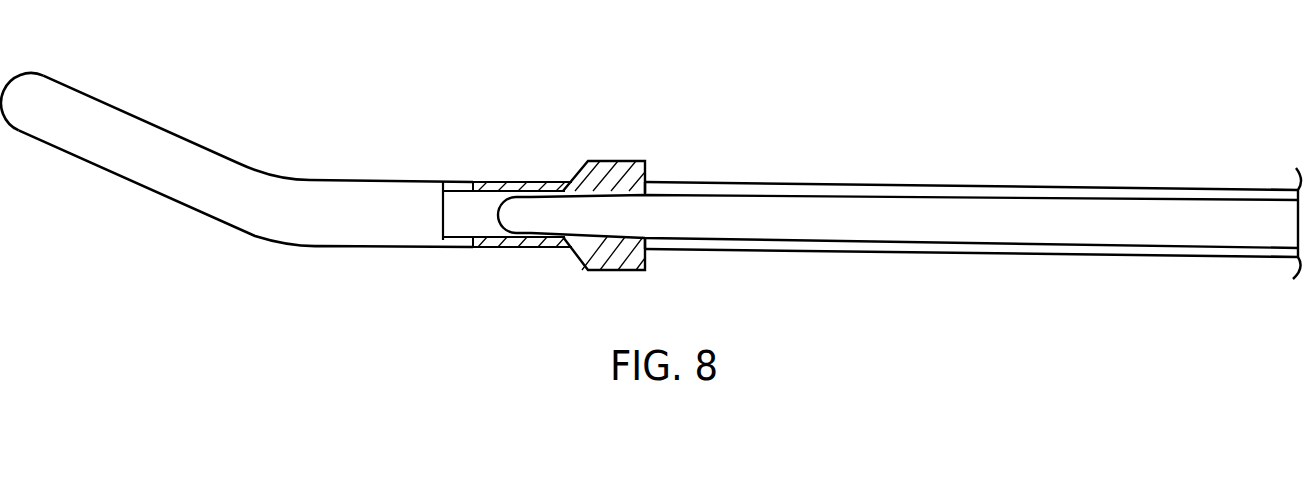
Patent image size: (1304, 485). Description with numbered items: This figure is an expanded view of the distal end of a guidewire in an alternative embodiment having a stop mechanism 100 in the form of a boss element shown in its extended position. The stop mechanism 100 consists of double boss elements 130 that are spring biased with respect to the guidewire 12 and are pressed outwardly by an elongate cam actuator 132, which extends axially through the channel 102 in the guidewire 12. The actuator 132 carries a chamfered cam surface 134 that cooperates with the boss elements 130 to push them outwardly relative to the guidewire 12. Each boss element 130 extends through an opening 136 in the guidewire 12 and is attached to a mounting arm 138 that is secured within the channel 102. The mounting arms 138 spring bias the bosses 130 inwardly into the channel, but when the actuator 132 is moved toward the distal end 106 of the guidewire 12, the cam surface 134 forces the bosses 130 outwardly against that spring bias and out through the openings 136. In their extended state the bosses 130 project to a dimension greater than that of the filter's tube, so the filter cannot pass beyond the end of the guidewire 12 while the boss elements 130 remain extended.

The stop mechanism 100 is at (697, 112).
The distal end 106 is at (140, 125).
The guidewire 12 is at (854, 185).
The channel 102 is at (1132, 193).
The elongate cam actuator 132 is at (940, 243).
The boss elements 130 is at (613, 160).
The chamfered cam surface 134 is at (545, 248).
The opening 136 is at (645, 184).
The mounting arm 138 is at (503, 180).